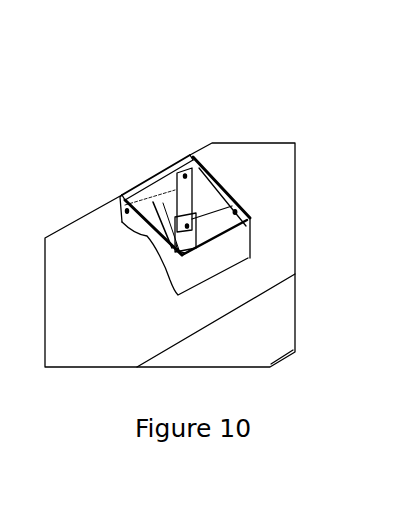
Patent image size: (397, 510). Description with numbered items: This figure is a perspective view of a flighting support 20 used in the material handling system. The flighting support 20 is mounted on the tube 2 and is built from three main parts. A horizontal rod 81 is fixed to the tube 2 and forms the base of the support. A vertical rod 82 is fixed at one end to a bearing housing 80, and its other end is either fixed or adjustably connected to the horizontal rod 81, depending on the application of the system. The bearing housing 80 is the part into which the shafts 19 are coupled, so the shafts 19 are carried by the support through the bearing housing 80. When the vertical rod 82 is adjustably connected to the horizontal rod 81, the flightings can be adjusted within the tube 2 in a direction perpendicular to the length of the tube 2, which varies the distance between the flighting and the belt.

The tube 2 is at (270, 158).
The flighting support 20 is at (152, 108).
The horizontal rod 81 is at (163, 177).
The vertical rod 82 is at (187, 193).
The shafts 19 is at (217, 225).
The bearing housing 80 is at (198, 220).